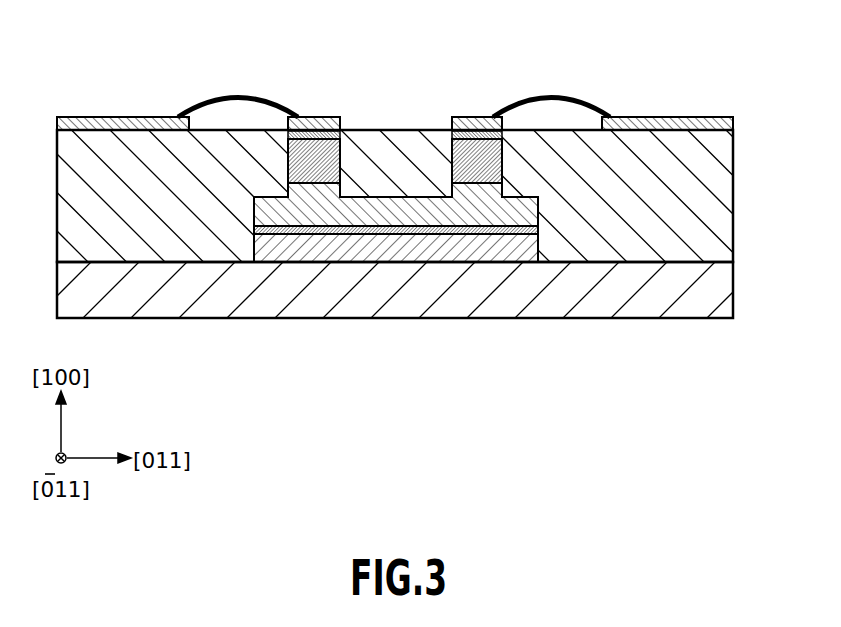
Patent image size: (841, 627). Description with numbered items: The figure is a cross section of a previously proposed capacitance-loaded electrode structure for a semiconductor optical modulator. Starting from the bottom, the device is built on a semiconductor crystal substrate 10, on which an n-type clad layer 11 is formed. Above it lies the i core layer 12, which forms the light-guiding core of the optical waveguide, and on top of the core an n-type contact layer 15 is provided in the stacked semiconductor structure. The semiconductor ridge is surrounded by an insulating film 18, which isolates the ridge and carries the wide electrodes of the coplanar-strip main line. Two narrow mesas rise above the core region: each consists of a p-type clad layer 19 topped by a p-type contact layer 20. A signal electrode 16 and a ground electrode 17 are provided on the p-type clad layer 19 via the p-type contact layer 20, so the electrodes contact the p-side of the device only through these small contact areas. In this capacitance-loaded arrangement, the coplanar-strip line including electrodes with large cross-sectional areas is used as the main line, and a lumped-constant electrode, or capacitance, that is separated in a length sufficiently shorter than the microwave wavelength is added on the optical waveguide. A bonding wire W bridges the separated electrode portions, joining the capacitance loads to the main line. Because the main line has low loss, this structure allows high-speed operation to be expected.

The semiconductor crystal substrate 10 is at (702, 281).
The n-type clad layer 11 is at (478, 250).
The i core layer 12 is at (330, 217).
The n-type contact layer 15 is at (408, 232).
The signal electrode 16 is at (118, 118).
The ground electrode 17 is at (472, 118).
The insulating film 18 is at (702, 215).
The p-type clad layer 19 is at (288, 168).
The p-type contact layer 20 is at (343, 136).
The bonding wire W is at (239, 96).